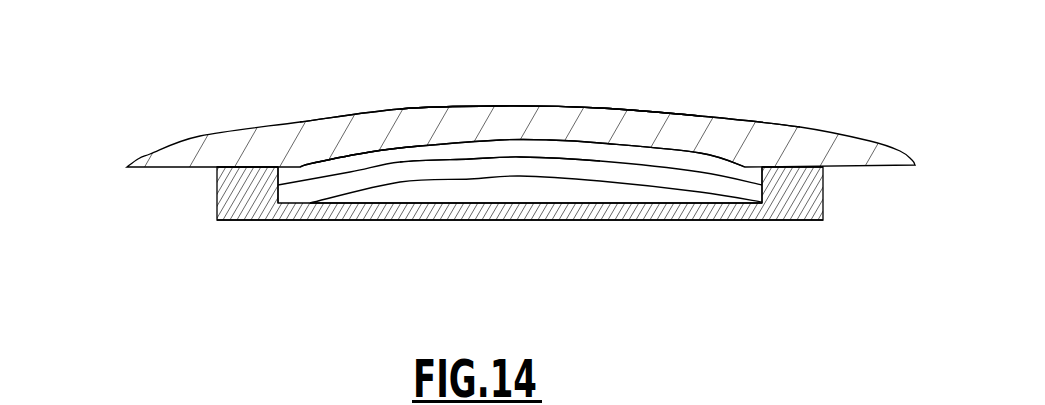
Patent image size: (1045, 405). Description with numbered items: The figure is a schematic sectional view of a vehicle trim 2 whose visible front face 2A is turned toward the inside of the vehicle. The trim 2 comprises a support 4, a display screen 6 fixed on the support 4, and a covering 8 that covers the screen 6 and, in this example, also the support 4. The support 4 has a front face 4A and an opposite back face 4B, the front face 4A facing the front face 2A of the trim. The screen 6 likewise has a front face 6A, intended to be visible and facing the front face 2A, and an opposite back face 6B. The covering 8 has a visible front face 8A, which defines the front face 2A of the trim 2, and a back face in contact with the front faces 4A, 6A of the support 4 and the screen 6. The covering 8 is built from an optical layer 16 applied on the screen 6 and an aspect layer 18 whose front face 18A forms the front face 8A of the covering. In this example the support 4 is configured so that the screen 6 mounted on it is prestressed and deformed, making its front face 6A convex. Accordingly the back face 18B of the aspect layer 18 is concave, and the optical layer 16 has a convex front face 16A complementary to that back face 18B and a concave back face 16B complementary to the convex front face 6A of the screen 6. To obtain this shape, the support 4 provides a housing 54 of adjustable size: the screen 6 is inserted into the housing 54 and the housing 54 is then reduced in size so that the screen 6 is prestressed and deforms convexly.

The trim 2 is at (81, 117).
The front face of the trim 2A is at (588, 110).
The support 4 is at (295, 217).
The front face of the support 4A is at (168, 165).
The back face of the support 4B is at (232, 221).
The display screen 6 is at (450, 170).
The front face of the screen 6A is at (460, 153).
The back face of the screen 6B is at (557, 178).
The covering 8 is at (255, 121).
The front face of the covering 8A is at (588, 110).
The optical layer 16 is at (348, 163).
The front face of the optical layer 16A is at (413, 140).
The back face of the optical layer 16B is at (313, 180).
The aspect layer 18 is at (214, 142).
The front face of the aspect layer 18A is at (588, 110).
The back face of the aspect layer 18B is at (638, 150).
The housing 54 is at (627, 192).